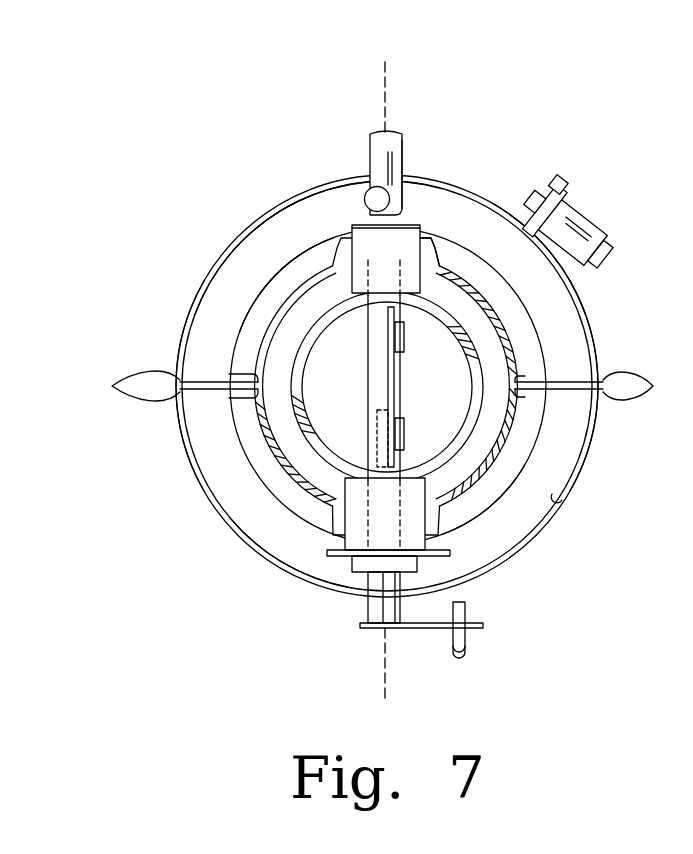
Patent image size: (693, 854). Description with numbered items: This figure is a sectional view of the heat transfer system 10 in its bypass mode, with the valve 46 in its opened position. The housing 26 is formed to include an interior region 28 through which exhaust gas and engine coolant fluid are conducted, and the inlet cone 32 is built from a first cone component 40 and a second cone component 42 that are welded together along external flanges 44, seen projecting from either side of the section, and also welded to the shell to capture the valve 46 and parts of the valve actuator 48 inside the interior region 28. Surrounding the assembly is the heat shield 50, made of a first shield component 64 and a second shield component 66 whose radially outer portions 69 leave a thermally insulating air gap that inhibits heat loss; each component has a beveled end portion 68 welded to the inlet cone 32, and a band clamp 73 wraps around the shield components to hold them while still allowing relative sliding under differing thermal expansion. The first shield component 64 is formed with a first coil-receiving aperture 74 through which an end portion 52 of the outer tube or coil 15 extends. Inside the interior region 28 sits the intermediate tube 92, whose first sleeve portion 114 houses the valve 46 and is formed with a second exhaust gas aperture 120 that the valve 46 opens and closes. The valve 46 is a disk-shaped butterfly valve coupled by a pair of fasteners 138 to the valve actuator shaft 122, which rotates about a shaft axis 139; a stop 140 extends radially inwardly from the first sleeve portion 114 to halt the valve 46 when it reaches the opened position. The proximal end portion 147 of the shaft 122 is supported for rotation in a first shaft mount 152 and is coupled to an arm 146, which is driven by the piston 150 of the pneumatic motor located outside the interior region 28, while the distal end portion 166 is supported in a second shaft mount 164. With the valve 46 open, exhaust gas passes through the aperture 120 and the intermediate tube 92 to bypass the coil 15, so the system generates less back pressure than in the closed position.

The heat transfer system 10 is at (183, 152).
The outer tube or coil 15 is at (412, 165).
The housing 26 is at (520, 333).
The interior region 28 is at (490, 425).
The inlet cone 32 is at (480, 490).
The first cone component 40 is at (267, 317).
The second cone component 42 is at (274, 361).
The external flanges 44 is at (112, 386).
The valve 46 is at (402, 375).
The valve actuator 48 is at (460, 652).
The heat shield 50 is at (283, 215).
The end portion of coil 52 is at (405, 147).
The first shield component 64 is at (255, 226).
The second shield component 66 is at (250, 528).
The beveled end portion 68 is at (205, 335).
The radially outer portions 69 is at (519, 227).
The band clamp 73 is at (530, 212).
The first coil-receiving aperture 74 is at (350, 185).
The intermediate tube 92 is at (302, 330).
The first sleeve portion 114 is at (236, 358).
The second exhaust gas aperture 120 is at (256, 396).
The valve actuator shaft 122 is at (368, 352).
The fasteners 138 is at (403, 328).
The shaft axis 139 is at (392, 73).
The stop 140 is at (372, 430).
The arm 146 is at (437, 622).
The proximal end portion 147 is at (368, 605).
The piston 150 is at (453, 636).
The first shaft mount 152 is at (362, 575).
The second shaft mount 164 is at (425, 217).
The distal end portion 166 is at (427, 267).